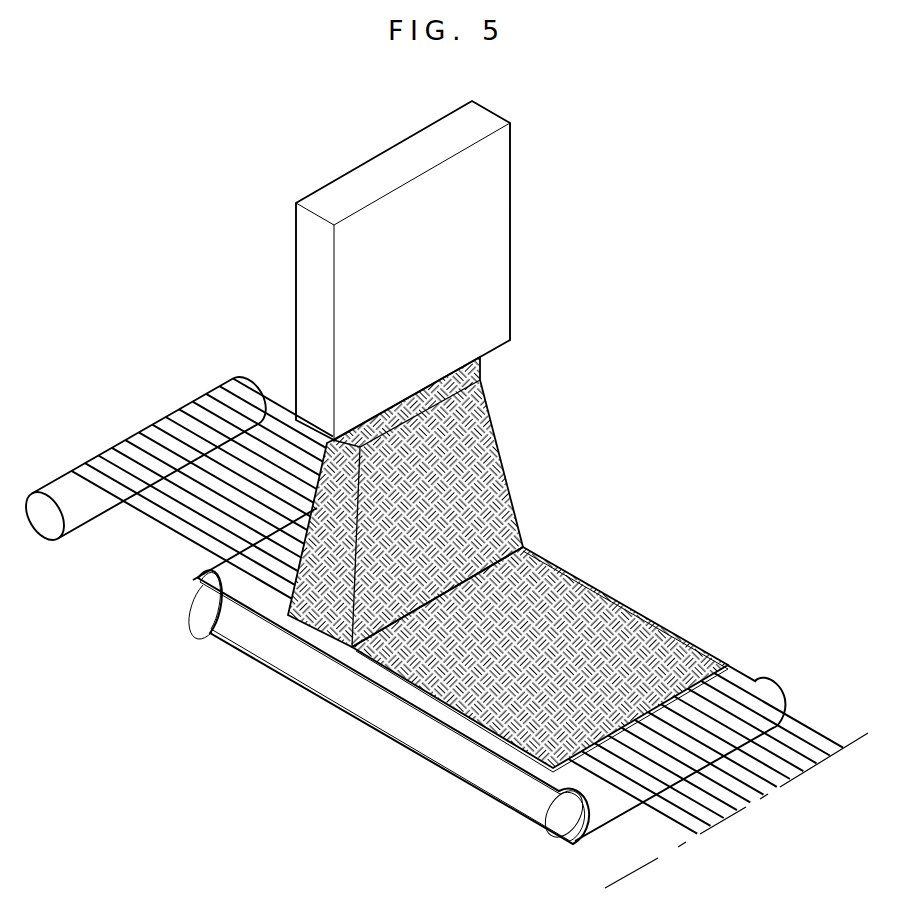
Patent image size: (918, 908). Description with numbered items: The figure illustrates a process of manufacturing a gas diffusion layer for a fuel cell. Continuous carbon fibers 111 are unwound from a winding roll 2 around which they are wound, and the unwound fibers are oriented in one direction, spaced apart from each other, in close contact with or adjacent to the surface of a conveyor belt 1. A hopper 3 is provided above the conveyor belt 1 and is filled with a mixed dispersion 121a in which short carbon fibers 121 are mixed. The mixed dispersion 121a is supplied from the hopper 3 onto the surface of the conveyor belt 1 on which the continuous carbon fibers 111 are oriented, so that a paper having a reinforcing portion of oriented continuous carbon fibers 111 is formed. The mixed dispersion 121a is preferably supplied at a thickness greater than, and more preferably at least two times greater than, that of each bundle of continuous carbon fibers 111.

The conveyor belt 1 is at (467, 770).
The winding roll 2 is at (48, 520).
The hopper 3 is at (493, 254).
The continuous carbon fibers 111 is at (747, 687).
The short carbon fibers 121 is at (620, 618).
The mixed dispersion 121a is at (498, 438).